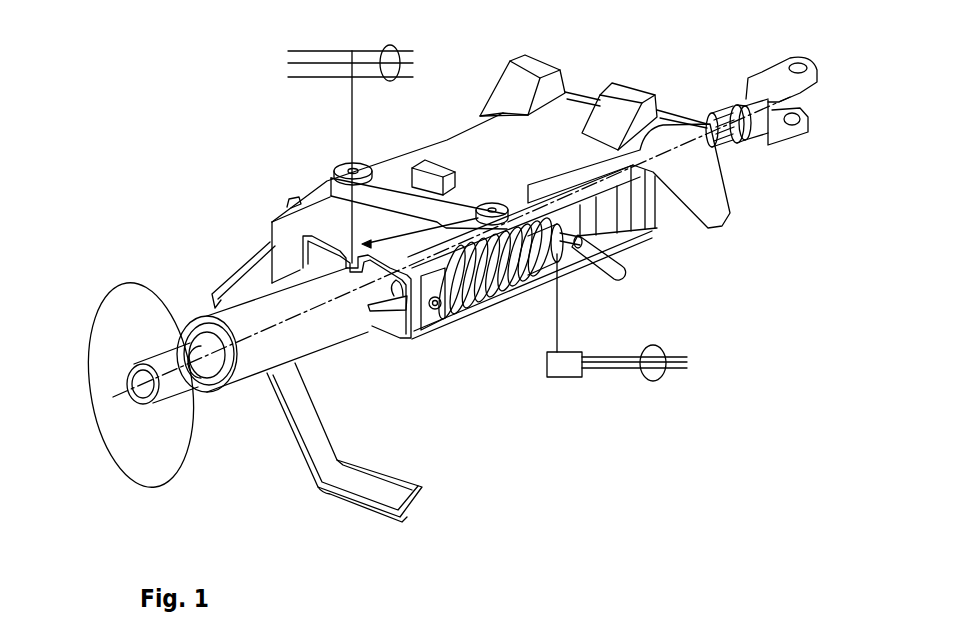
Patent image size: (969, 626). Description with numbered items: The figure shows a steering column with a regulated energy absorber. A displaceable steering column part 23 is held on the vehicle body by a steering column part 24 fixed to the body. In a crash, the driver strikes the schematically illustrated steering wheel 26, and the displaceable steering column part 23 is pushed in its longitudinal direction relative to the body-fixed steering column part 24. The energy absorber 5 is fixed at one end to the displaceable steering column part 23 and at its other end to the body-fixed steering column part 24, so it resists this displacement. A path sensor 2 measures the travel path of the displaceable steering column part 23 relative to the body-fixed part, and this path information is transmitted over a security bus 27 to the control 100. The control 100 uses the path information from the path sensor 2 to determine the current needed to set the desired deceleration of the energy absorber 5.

The path sensor 2 is at (347, 247).
The energy absorber 5 is at (485, 317).
The displaceable steering column part 23 is at (298, 294).
The steering column part fixed to the body 24 is at (443, 152).
The steering wheel 26 is at (178, 477).
The security bus 27 is at (398, 47).
The control 100 is at (568, 368).